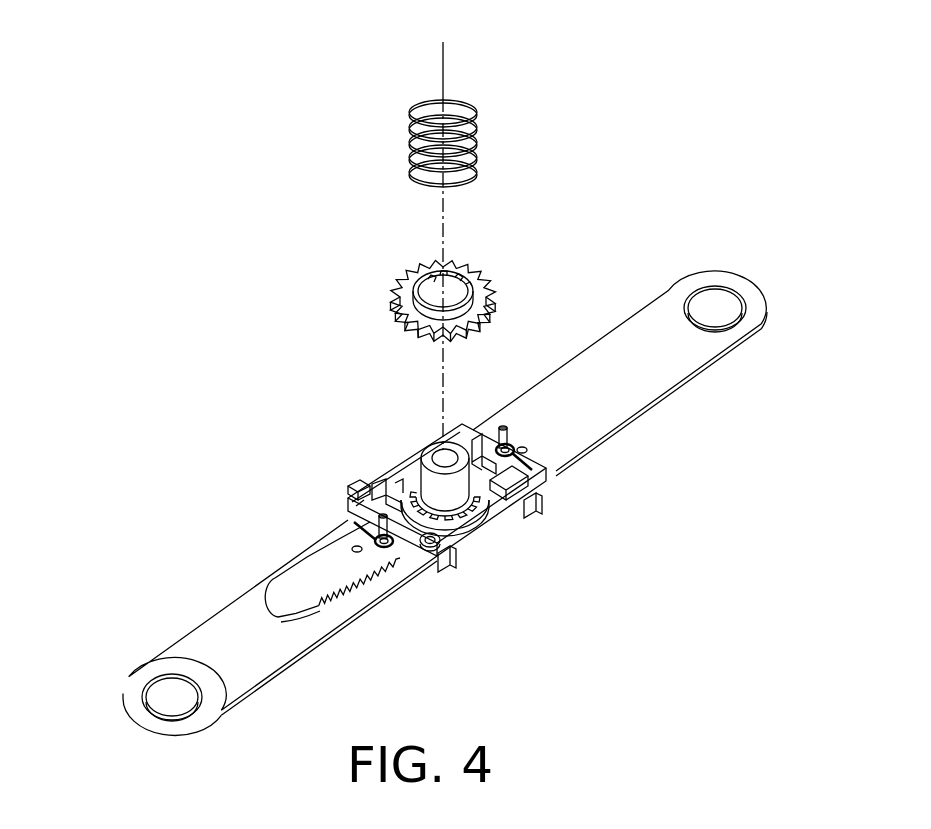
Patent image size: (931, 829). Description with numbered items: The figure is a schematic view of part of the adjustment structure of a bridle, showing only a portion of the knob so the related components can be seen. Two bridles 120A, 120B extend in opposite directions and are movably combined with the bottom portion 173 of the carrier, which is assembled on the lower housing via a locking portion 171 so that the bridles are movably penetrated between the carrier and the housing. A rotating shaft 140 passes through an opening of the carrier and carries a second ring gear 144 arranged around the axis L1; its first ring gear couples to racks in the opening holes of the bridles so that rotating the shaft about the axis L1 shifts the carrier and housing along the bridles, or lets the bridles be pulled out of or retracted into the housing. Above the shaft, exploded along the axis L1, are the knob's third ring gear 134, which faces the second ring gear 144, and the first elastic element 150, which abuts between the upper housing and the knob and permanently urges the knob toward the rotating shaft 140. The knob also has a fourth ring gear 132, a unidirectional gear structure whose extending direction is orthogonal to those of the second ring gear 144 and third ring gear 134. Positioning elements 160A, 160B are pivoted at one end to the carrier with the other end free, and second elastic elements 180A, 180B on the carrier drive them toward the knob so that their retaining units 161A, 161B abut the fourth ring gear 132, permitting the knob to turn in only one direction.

The axis L1 is at (443, 225).
The first elastic element 150 is at (478, 119).
The fourth ring gear 132 is at (494, 300).
The third ring gear 134 is at (432, 283).
The bridle 120A is at (647, 333).
The bridle 120B is at (207, 640).
The rotating shaft 140 is at (422, 447).
The second ring gear 144 is at (428, 492).
The positioning element 160A is at (497, 442).
The positioning element 160B is at (395, 545).
The retaining unit 161A is at (480, 450).
The retaining unit 161B is at (378, 495).
The locking portion 171 is at (530, 512).
The bottom portion 173 is at (435, 568).
The second elastic element 180A is at (523, 448).
The second elastic element 180B is at (355, 548).